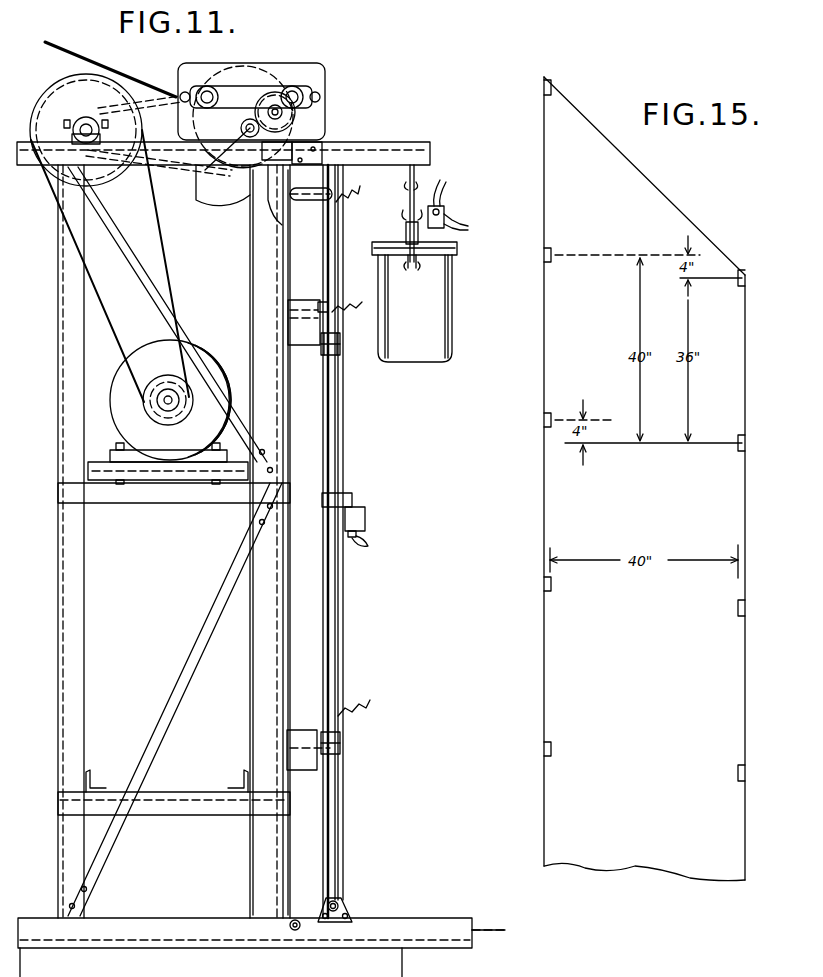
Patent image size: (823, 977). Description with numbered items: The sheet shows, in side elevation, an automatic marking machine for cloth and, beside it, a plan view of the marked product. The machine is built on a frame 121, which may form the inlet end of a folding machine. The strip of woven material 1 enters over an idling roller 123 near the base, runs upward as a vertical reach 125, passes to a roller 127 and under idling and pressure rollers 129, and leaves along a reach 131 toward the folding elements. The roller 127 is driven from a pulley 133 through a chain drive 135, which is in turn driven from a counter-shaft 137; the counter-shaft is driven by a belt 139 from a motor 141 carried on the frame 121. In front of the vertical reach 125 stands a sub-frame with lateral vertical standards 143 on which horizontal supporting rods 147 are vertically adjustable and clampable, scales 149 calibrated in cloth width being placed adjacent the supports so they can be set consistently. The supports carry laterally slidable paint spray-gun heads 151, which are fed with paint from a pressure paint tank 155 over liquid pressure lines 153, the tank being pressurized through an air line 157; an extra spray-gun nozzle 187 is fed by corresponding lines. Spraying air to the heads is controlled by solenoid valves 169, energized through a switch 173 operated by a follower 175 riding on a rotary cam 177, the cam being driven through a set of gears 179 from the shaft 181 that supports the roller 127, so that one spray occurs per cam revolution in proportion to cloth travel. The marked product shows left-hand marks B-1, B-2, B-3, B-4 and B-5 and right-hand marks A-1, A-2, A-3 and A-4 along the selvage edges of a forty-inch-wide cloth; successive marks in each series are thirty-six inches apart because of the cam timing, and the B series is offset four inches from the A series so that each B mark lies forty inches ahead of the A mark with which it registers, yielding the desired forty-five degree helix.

In FIG. 11, the strip of woven material 1 is at (486, 930).
In FIG. 15, the strip of woven material 1 is at (642, 876).
In FIG. 11, the frame 121 is at (70, 586).
In FIG. 11, the idling roller 123 is at (302, 914).
In FIG. 11, the vertical reach 125 is at (286, 620).
In FIG. 11, the roller 127 is at (232, 186).
In FIG. 11, the idling and pressure rollers 129 is at (209, 85).
In FIG. 11, the reach 131 is at (66, 48).
In FIG. 11, the pulley 133 is at (240, 200).
In FIG. 11, the chain drive 135 is at (148, 100).
In FIG. 11, the counter-shaft 137 is at (85, 122).
In FIG. 11, the belt 139 is at (108, 306).
In FIG. 11, the motor 141 is at (124, 388).
In FIG. 11, the lateral vertical standards 143 is at (330, 604).
In FIG. 11, the horizontal supporting rods 147 is at (340, 350).
In FIG. 11, the scales 149 is at (344, 664).
In FIG. 11, the paint spray-gun heads 151 is at (310, 360).
In FIG. 11, the liquid pressure lines 153 is at (346, 198).
In FIG. 11, the pressure paint tank 155 is at (424, 350).
In FIG. 11, the air line 157 is at (443, 186).
In FIG. 11, the solenoid valves 169 is at (366, 514).
In FIG. 11, the switch 173 is at (300, 140).
In FIG. 11, the follower 175 is at (270, 166).
In FIG. 11, the rotary cam 177 is at (273, 96).
In FIG. 11, the set of gears 179 is at (232, 136).
In FIG. 11, the shaft 181 is at (200, 172).
In FIG. 11, the extra spray-gun nozzle 187 is at (318, 194).
In FIG. 15, the left-hand mark B-1 is at (544, 93).
In FIG. 15, the left-hand mark B-2 is at (544, 258).
In FIG. 15, the left-hand mark B-3 is at (544, 424).
In FIG. 15, the left-hand mark B-4 is at (544, 588).
In FIG. 15, the left-hand mark B-5 is at (544, 753).
In FIG. 15, the right-hand mark A-1 is at (745, 278).
In FIG. 15, the right-hand mark A-2 is at (745, 443).
In FIG. 15, the right-hand mark A-3 is at (745, 608).
In FIG. 15, the right-hand mark A-4 is at (745, 773).